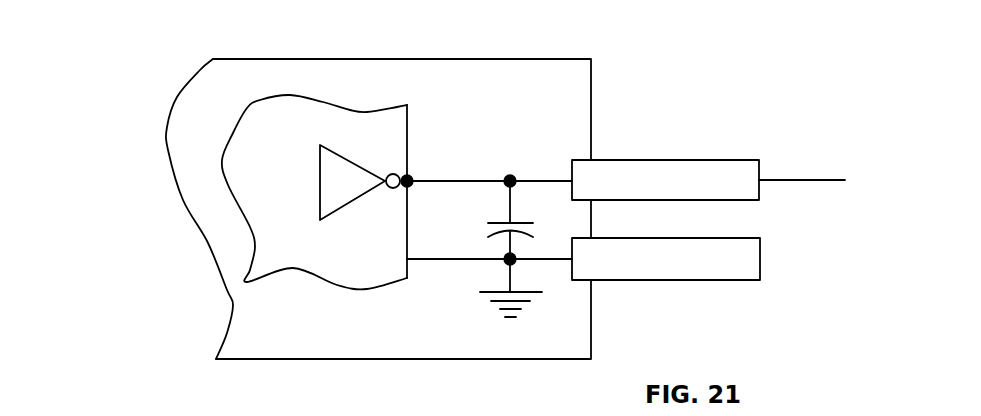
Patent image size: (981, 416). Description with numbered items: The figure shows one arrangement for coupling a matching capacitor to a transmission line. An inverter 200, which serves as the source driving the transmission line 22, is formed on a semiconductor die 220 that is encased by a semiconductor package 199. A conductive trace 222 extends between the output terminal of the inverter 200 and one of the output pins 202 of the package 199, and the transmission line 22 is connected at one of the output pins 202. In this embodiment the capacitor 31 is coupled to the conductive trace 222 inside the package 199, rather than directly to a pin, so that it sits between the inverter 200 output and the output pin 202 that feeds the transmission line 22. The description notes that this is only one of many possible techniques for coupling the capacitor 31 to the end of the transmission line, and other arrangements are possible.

The semiconductor package 199 is at (222, 270).
The semiconductor die 220 is at (228, 185).
The inverter 200 is at (352, 162).
The conductive trace 222 is at (423, 262).
The capacitor 31 is at (526, 223).
The output pin 202 is at (668, 175).
The transmission line 22 is at (795, 177).